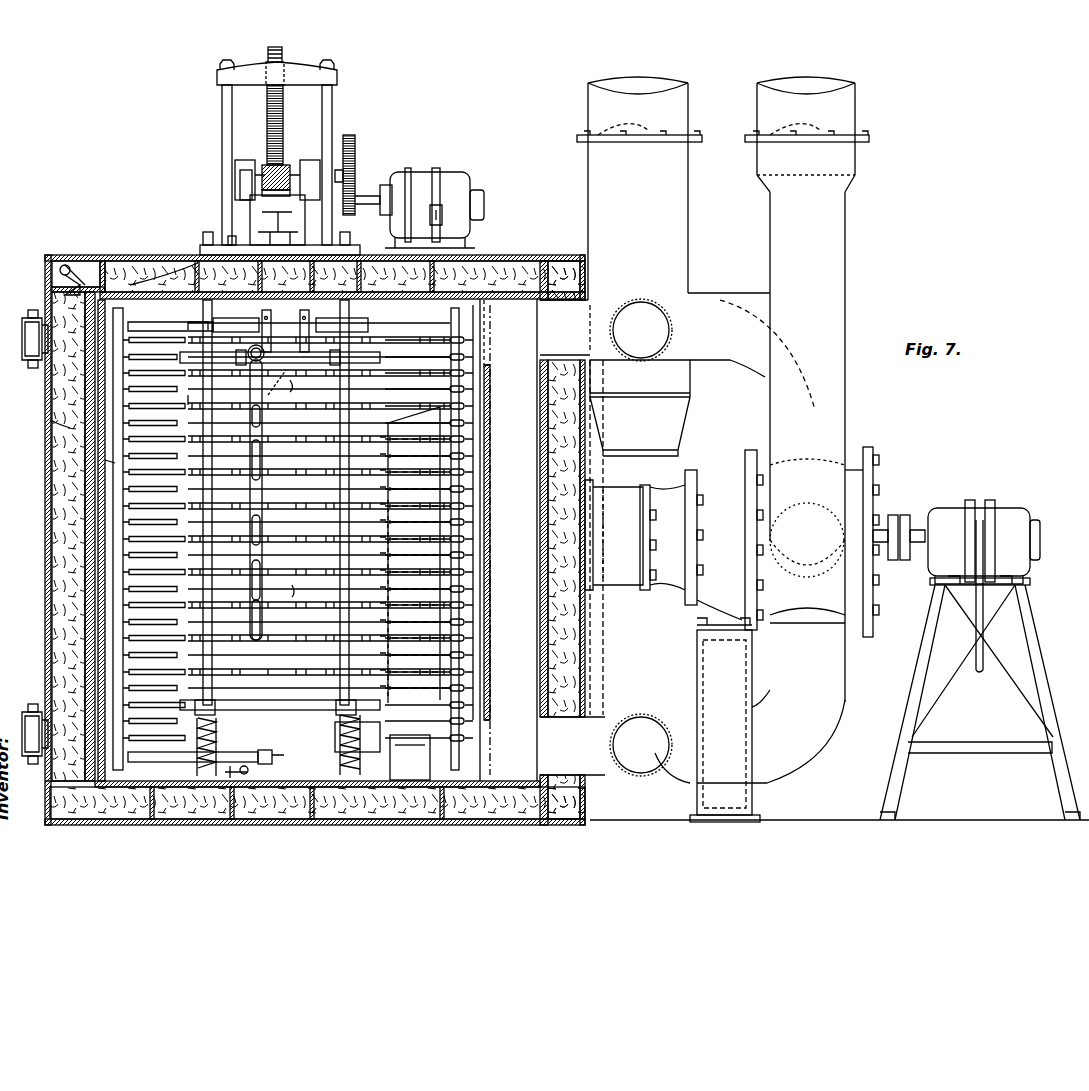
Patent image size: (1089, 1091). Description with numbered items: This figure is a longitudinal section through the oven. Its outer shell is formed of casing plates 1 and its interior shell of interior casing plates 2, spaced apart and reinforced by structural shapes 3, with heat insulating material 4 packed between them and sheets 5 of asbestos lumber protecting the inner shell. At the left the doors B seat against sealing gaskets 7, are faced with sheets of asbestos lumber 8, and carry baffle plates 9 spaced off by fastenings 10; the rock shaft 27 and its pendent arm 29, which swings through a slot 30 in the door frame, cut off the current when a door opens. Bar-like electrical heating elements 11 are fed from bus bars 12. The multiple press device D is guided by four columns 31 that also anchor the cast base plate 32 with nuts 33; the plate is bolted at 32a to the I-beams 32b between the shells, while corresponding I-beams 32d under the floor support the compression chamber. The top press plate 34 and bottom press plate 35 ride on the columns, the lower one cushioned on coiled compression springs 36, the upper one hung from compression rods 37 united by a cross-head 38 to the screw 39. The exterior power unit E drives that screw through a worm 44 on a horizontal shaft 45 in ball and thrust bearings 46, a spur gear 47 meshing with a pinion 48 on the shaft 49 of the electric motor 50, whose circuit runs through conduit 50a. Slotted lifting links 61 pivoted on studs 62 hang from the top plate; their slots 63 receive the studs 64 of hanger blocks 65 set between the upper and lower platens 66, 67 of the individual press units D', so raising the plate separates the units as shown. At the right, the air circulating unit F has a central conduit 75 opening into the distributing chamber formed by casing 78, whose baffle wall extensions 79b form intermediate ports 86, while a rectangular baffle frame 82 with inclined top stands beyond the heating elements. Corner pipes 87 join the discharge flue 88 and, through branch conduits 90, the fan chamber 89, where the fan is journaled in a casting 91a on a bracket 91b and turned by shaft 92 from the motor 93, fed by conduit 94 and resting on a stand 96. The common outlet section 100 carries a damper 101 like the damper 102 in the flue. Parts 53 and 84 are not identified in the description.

The casing plates 1 is at (539, 256).
The interior casing plates 2 is at (547, 789).
The structural shapes 3 is at (135, 263).
The heat insulating material 4 is at (503, 266).
The sheets of asbestos lumber 5 is at (402, 300).
The sealing gaskets 7 is at (120, 792).
The sheets of asbestos lumber 8 is at (84, 433).
The baffle plates 9 is at (94, 349).
The fastenings 10 is at (93, 302).
The electrical heating elements 11 is at (136, 504).
The bus bars 12 is at (113, 463).
The rock shaft 27 is at (63, 268).
The pendent arm 29 is at (85, 268).
The slot 30 is at (45, 254).
The guide posts or columns 31 is at (205, 314).
The base plate 32 is at (210, 242).
The bolts 32a is at (277, 220).
The I-beams 32b is at (200, 262).
The I-beams 32d is at (411, 758).
The nuts 33 is at (207, 230).
The top press plate 34 is at (322, 360).
The bottom press plate 35 is at (314, 706).
The coiled compression springs 36 is at (200, 758).
The compression rods 37 is at (225, 108).
The cross-head 38 is at (333, 82).
The screw 39 is at (283, 58).
The worm 44 is at (285, 173).
The horizontal shaft 45 is at (258, 175).
The ball and thrust bearings 46 is at (243, 180).
The spur gear 47 is at (355, 145).
The pinion 48 is at (356, 200).
The motor shaft 49 is at (395, 198).
The electric motor 50 is at (447, 173).
The conduit 50a is at (455, 208).
The bearing 53 is at (232, 240).
The lifting bars or links 61 is at (254, 385).
The studs 62 is at (263, 348).
The slots 63 is at (250, 427).
The laterally projecting studs 64 is at (252, 458).
The hanger blocks 65 is at (245, 629).
The upper platen 66 is at (302, 510).
The lower platen 67 is at (297, 388).
The central conduit 75 is at (612, 492).
The casing 78 is at (506, 366).
The top and bottom extensions 79b is at (490, 485).
The baffle frame 82 is at (428, 456).
The deflector 84 is at (408, 425).
The intermediate ports 86 is at (493, 560).
The corner pipes 87 is at (605, 304).
The discharge flue 88 is at (638, 426).
The fan chamber 89 is at (853, 460).
The branch conduits 90 is at (820, 330).
The casting 91a is at (668, 490).
The bracket 91b is at (694, 630).
The shaft 92 is at (887, 520).
The motor 93 is at (942, 513).
The conduit 94 is at (992, 595).
The stand 96 is at (1033, 642).
The common outlet section 100 is at (850, 157).
The damper or cut-off 101 is at (844, 120).
The damper or cut-off 102 is at (673, 120).
The doors B is at (47, 399).
The multiple press device D is at (319, 505).
The individual press units D' is at (255, 379).
The power unit E is at (314, 126).
The air circulating unit F is at (663, 408).